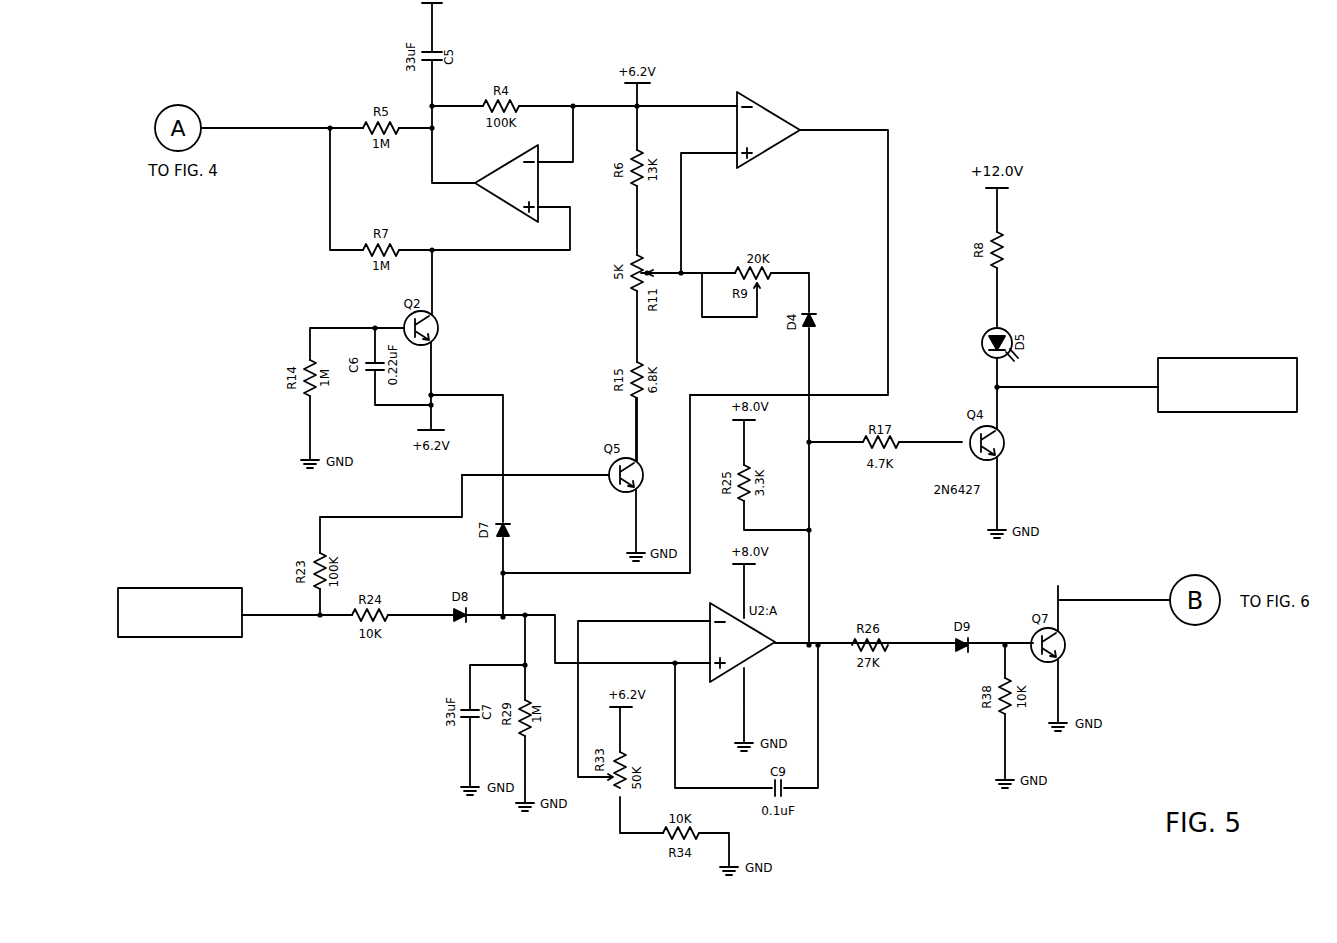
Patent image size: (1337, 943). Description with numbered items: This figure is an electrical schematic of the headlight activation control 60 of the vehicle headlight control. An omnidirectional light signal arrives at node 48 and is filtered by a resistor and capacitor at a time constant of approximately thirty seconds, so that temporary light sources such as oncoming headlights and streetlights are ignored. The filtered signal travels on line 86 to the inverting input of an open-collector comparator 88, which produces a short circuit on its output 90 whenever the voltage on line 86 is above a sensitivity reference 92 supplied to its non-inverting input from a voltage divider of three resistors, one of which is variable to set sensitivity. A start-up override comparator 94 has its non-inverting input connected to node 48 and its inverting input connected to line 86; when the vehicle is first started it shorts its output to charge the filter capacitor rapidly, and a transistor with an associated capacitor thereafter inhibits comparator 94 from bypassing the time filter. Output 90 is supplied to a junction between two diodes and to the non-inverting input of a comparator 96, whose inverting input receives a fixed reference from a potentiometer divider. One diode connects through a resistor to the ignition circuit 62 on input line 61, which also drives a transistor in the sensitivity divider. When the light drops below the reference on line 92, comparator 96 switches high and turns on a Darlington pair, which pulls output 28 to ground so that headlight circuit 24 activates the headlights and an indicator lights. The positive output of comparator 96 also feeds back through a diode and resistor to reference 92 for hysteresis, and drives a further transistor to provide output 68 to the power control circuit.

The headlight circuit 24 is at (1225, 358).
The output 28 is at (1050, 387).
The node 48 is at (241, 128).
The headlight activation control 60 is at (562, 338).
The input 61 is at (322, 617).
The ignition circuit 62 is at (170, 588).
The input 68 is at (1080, 600).
The line 86 is at (693, 106).
The open-collector comparator 88 is at (767, 105).
The output 90 is at (888, 217).
The reference 92 is at (681, 208).
The open collector comparator 94 is at (504, 207).
The comparator 96 is at (755, 655).